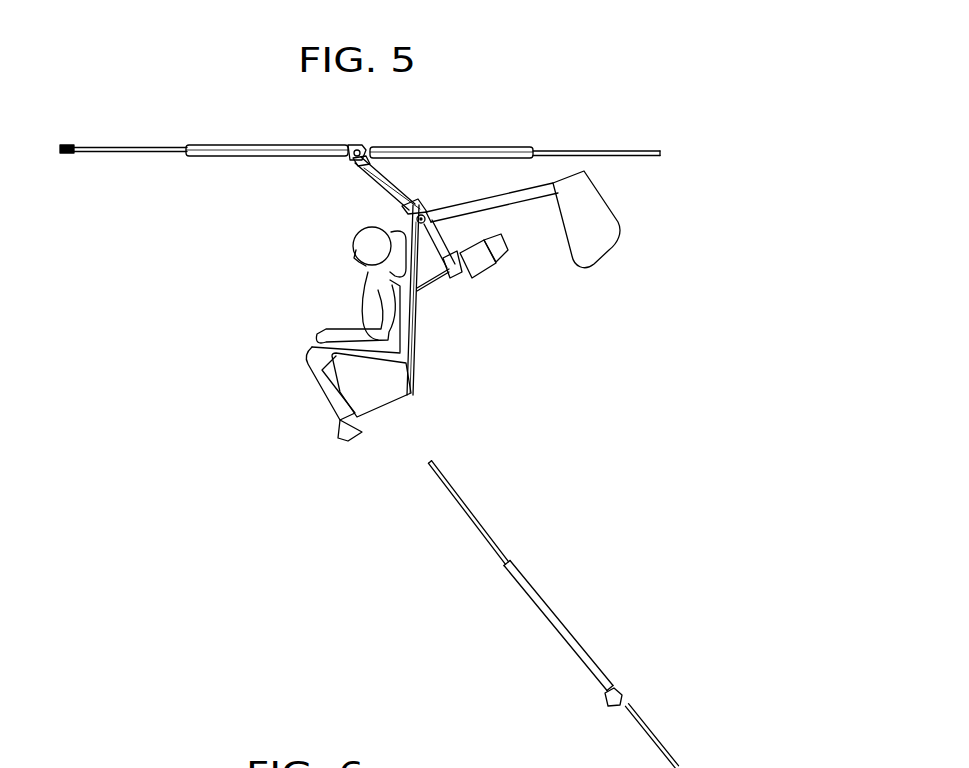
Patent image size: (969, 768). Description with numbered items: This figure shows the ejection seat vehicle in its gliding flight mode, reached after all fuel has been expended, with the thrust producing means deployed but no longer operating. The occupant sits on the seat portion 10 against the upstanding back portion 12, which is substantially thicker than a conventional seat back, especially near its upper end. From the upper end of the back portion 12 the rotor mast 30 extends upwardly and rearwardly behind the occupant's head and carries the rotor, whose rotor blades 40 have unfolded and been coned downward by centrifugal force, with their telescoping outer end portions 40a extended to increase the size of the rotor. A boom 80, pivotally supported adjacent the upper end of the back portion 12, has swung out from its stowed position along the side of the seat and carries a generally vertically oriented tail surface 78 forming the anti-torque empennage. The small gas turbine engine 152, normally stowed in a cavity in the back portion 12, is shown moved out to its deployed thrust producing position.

In FIG. 5, the seat portion 10 is at (392, 412).
In FIG. 5, the back portion 12 is at (417, 334).
In FIG. 5, the rotor mast 30 is at (376, 187).
In FIG. 5, the rotor blades 40 is at (430, 152).
In FIG. 6, the rotor blades 40 is at (553, 613).
In FIG. 5, the telescoping outer end portions 40a is at (578, 151).
In FIG. 6, the telescoping outer end portions 40a is at (481, 517).
In FIG. 5, the vertical tail surfaces 78 is at (598, 229).
In FIG. 5, the booms 80 is at (517, 193).
In FIG. 5, the gas turbine engine 152 is at (481, 277).